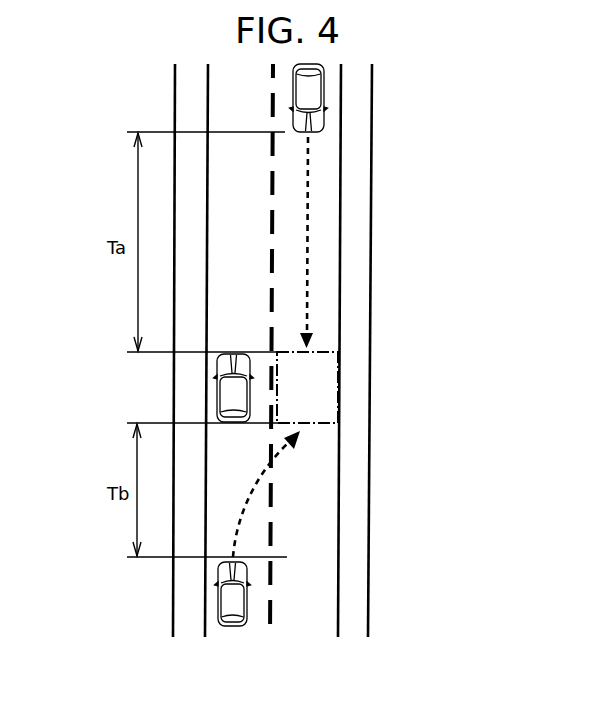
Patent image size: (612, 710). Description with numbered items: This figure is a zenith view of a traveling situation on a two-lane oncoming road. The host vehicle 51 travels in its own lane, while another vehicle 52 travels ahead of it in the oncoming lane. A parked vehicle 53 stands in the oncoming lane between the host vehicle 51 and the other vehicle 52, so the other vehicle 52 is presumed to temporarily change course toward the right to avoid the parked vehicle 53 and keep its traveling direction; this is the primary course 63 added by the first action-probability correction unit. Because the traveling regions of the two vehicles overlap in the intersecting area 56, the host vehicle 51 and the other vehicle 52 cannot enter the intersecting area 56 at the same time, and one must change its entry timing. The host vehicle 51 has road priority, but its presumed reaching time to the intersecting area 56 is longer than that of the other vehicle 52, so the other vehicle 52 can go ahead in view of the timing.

The host vehicle 51 is at (323, 104).
The other vehicle 52 is at (218, 594).
The parked vehicle 53 is at (217, 389).
The intersecting area 56 is at (330, 386).
The primary course 63 is at (272, 467).